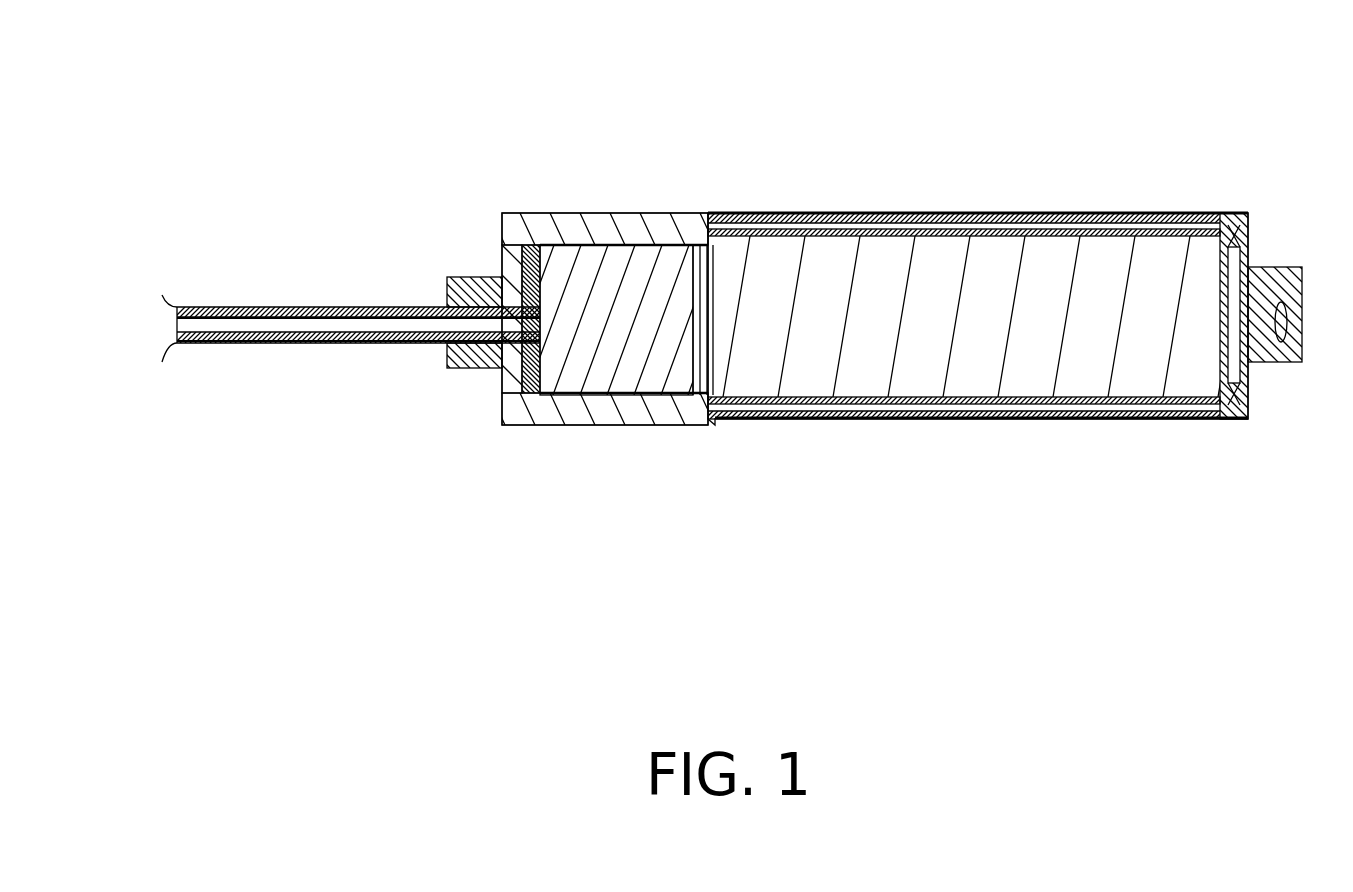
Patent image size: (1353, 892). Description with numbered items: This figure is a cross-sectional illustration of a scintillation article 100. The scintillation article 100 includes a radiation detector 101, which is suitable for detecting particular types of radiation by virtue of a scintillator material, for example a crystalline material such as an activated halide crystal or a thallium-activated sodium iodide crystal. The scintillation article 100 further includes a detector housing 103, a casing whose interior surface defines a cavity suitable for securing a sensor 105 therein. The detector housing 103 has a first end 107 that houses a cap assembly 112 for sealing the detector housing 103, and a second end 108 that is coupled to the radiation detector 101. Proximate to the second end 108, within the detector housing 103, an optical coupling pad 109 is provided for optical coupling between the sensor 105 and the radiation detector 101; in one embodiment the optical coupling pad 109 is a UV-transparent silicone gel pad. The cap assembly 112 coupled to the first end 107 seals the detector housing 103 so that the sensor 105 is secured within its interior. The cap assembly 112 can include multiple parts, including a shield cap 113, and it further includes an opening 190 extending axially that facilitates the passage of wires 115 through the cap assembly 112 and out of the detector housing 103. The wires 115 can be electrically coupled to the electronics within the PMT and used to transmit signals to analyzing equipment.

The scintillation article 100 is at (717, 315).
The radiation detector 101 is at (1192, 262).
The detector housing 103 is at (667, 225).
The sensor 105 is at (657, 373).
The first end 107 is at (535, 314).
The second end 108 is at (702, 425).
The optical coupling pad 109 is at (703, 272).
The cap assembly 112 is at (485, 395).
The shield cap 113 is at (465, 348).
The wires 115 is at (233, 318).
The opening 190 is at (452, 308).